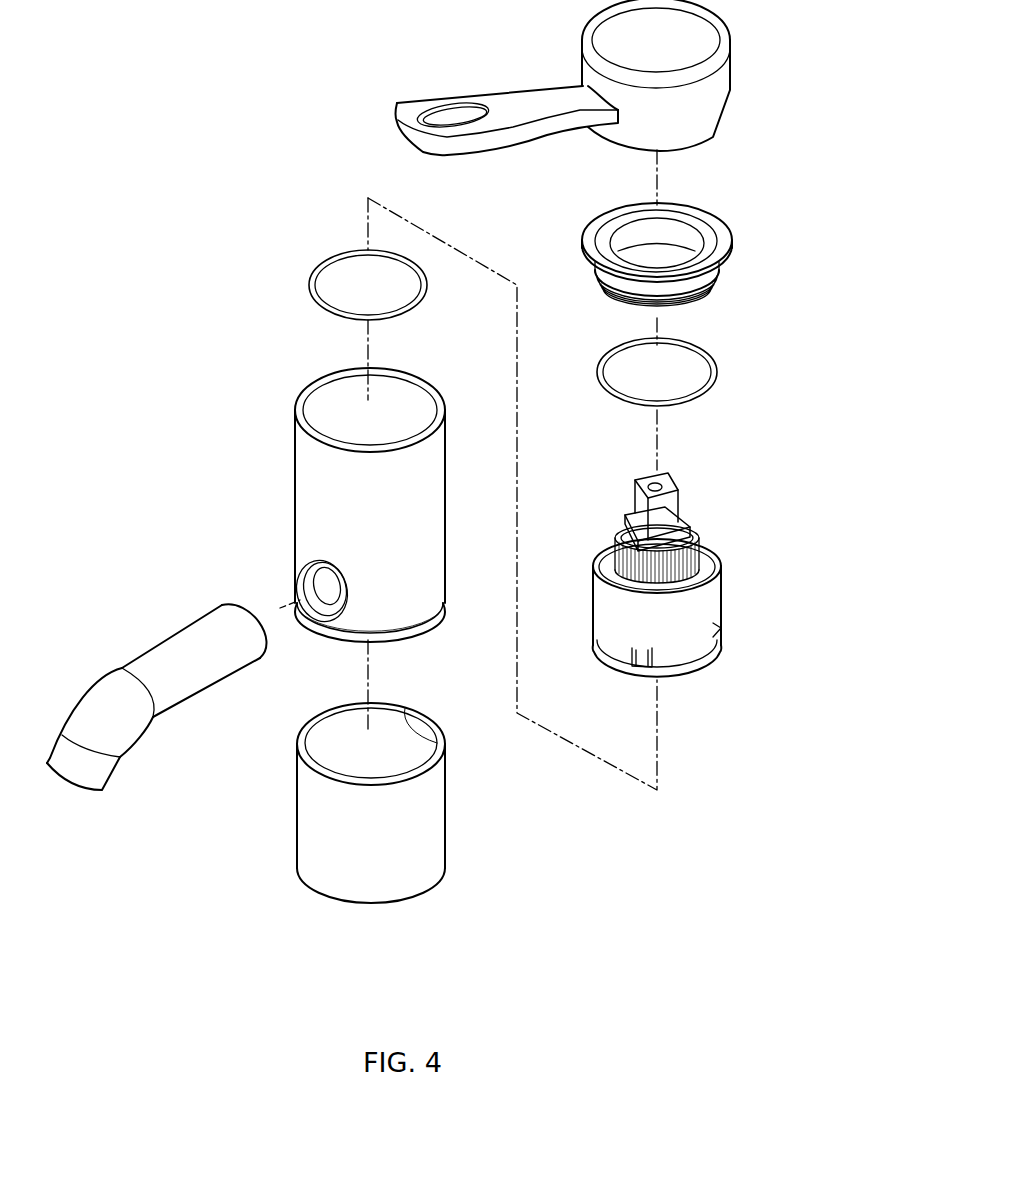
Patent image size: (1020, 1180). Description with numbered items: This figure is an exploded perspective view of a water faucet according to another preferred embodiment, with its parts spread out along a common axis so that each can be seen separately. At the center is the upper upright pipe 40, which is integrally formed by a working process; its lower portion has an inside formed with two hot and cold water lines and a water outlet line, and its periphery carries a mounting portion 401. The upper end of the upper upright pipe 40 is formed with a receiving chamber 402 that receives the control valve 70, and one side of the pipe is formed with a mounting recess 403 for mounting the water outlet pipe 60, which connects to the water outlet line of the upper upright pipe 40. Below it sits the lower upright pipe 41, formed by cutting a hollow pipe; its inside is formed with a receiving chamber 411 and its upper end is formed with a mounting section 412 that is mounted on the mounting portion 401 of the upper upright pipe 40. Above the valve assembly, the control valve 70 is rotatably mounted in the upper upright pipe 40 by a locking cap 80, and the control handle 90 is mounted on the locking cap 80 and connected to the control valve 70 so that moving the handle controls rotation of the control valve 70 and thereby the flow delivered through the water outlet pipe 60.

The control handle 90 is at (556, 50).
The locking cap 80 is at (734, 234).
The control valve 70 is at (728, 570).
The upper upright pipe 40 is at (289, 420).
The receiving chamber 402 is at (333, 430).
The mounting recess 403 is at (320, 585).
The mounting portion 401 is at (337, 637).
The lower upright pipe 41 is at (456, 818).
The receiving chamber 411 is at (343, 757).
The mounting section 412 is at (423, 731).
The water outlet pipe 60 is at (130, 765).